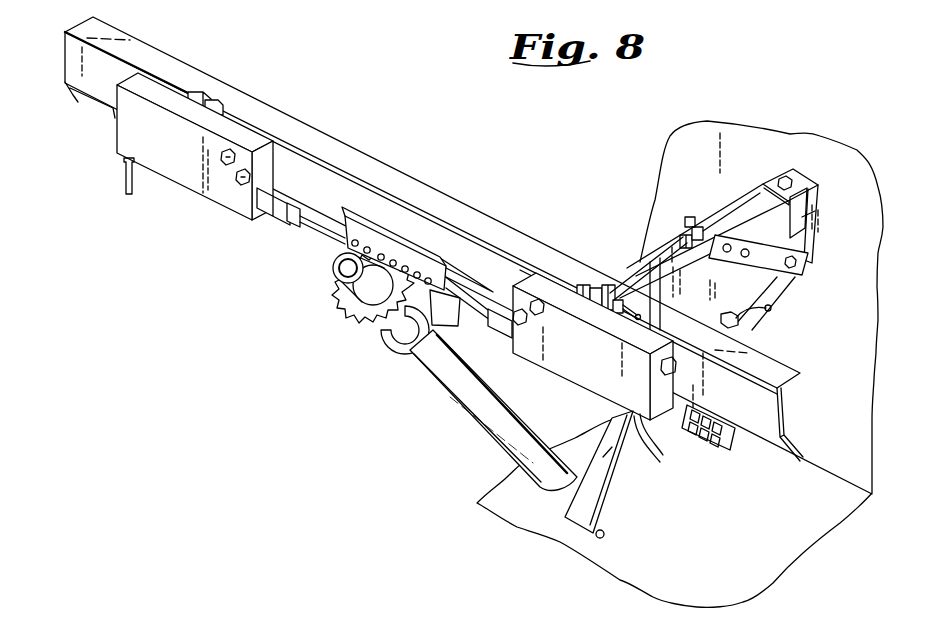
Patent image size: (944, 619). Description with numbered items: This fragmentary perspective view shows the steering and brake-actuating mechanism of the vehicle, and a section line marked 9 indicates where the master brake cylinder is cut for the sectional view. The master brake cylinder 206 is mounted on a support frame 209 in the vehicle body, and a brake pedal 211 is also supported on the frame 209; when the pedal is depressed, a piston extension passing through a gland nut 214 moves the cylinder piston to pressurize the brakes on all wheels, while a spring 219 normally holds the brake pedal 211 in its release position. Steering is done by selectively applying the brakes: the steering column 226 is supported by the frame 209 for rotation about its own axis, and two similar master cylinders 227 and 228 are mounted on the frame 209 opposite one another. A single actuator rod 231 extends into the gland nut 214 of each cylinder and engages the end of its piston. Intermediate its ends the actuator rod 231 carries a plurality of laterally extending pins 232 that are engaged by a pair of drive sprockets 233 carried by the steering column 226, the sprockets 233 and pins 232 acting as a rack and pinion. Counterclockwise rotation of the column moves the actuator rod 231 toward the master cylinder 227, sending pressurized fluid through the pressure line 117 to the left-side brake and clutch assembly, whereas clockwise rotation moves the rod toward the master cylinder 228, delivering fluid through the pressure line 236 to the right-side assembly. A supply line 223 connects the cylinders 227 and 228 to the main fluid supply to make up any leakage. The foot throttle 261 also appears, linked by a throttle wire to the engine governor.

The pressure line 117 is at (128, 175).
The master brake cylinder 206 is at (722, 293).
The support frame 209 is at (591, 258).
The brake pedal 211 is at (777, 290).
The gland nut 214 is at (265, 217).
The spring 219 is at (740, 324).
The supply line 223 is at (425, 208).
The steering column 226 is at (340, 297).
The master cylinder 227 is at (192, 187).
The master cylinder 228 is at (573, 377).
The actuator rod 231 is at (307, 227).
The laterally extending pins 232 is at (333, 263).
The drive sprockets 233 is at (357, 327).
The pressure line 236 is at (667, 456).
The foot throttle 261 is at (620, 475).
The section line 9- 9 is at (812, 162).